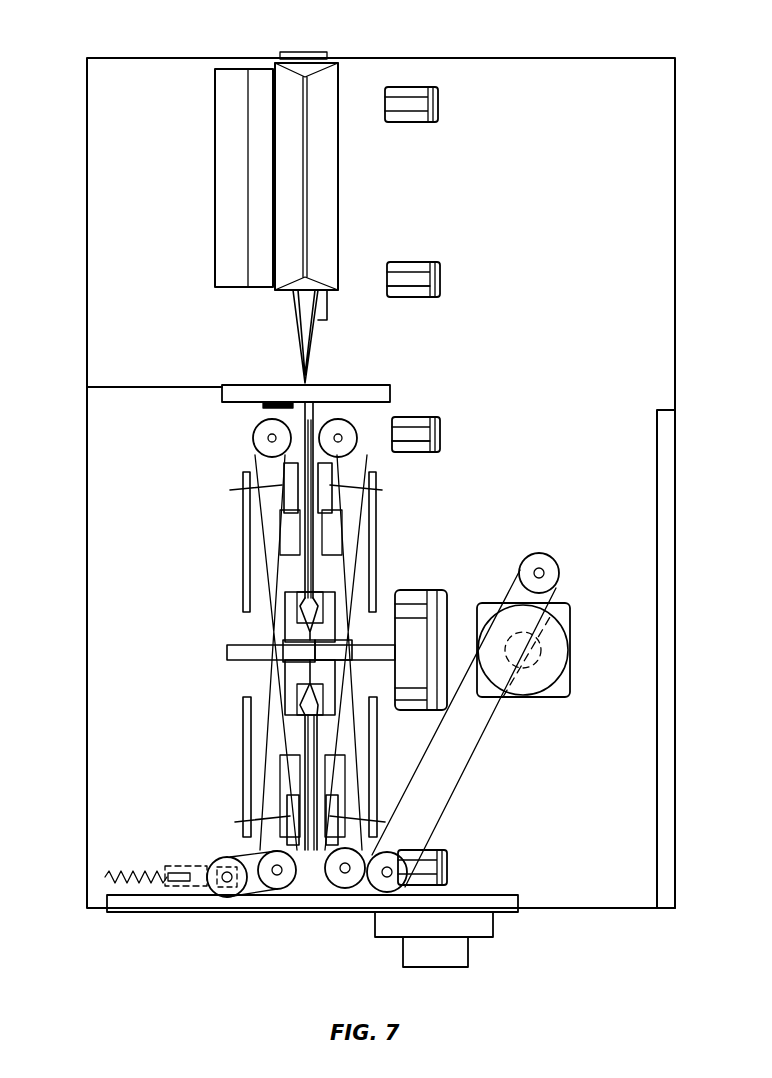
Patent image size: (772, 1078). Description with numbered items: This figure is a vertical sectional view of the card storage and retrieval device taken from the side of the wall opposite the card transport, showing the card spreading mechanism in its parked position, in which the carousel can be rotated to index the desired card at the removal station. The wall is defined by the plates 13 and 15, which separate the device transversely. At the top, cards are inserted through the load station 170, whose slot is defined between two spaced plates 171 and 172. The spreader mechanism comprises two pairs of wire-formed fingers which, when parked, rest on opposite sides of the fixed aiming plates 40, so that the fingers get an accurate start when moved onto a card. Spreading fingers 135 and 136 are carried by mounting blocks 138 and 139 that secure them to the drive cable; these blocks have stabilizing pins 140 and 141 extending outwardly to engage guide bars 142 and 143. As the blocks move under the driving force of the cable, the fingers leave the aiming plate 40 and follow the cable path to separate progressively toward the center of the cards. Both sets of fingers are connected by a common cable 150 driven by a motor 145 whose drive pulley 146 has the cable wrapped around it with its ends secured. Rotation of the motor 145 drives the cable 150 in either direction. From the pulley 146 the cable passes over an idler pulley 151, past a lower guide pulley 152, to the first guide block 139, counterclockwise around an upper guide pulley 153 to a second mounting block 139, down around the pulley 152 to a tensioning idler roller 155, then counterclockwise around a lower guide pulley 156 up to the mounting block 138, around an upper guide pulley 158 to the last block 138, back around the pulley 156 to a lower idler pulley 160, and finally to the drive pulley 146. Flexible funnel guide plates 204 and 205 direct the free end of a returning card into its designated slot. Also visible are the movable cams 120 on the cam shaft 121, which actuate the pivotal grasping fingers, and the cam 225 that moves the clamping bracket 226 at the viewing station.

The plate 13 is at (672, 130).
The plate 15 is at (87, 311).
The aiming plate 40 is at (310, 430).
The movable cam 120 is at (400, 278).
The cam shaft 121 is at (432, 292).
The spreading finger 135 is at (303, 425).
The spreading finger 136 is at (320, 430).
The mounting block 138 is at (286, 472).
The mounting block 139 is at (350, 470).
The stabilizing pin 140 is at (242, 488).
The stabilizing pin 141 is at (378, 488).
The guide bar 142 is at (244, 597).
The guide bar 143 is at (375, 527).
The motor 145 is at (568, 676).
The drive pulley 146 is at (572, 634).
The cable 150 is at (488, 745).
The idler pulley 151 is at (545, 562).
The lower guide pulley 152 is at (345, 889).
The upper guide pulley 153 is at (356, 436).
The tensioning idler roller 155 is at (226, 897).
The lower guide pulley 156 is at (275, 890).
The upper guide pulley 158 is at (262, 437).
The lower idler pulley 160 is at (390, 893).
The load station 170 is at (262, 68).
The plate 171 is at (287, 151).
The plate 172 is at (333, 162).
The flexible guide plate 204 is at (300, 540).
The flexible guide plate 205 is at (335, 555).
The cam 225 is at (440, 618).
The bracket 226 is at (405, 655).